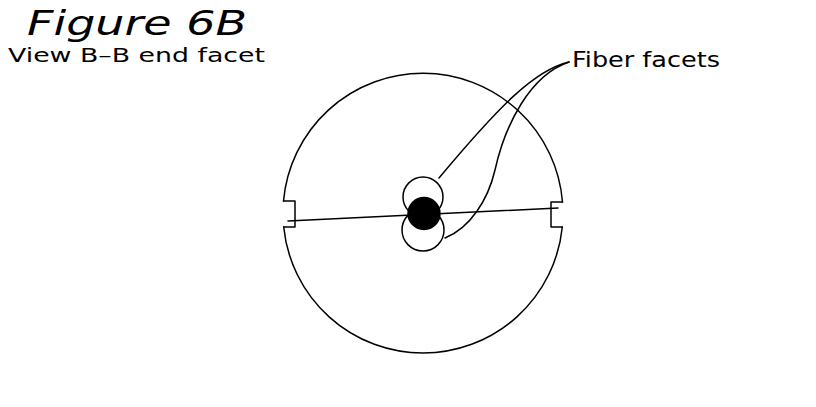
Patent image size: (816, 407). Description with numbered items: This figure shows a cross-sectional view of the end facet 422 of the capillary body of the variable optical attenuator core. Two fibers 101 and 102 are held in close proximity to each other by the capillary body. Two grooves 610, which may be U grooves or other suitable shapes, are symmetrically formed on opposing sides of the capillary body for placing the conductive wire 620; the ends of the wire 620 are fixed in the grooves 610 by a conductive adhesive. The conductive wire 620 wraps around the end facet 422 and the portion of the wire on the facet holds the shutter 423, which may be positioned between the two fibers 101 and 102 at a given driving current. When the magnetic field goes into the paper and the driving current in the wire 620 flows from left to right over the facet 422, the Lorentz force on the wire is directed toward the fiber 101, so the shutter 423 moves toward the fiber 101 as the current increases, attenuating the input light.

The end facet 422 is at (483, 322).
The grooves 610 is at (268, 230).
The conductive wire 620 is at (525, 222).
The fiber 102 is at (429, 177).
The fiber 101 is at (423, 251).
The shutter 423 is at (408, 206).